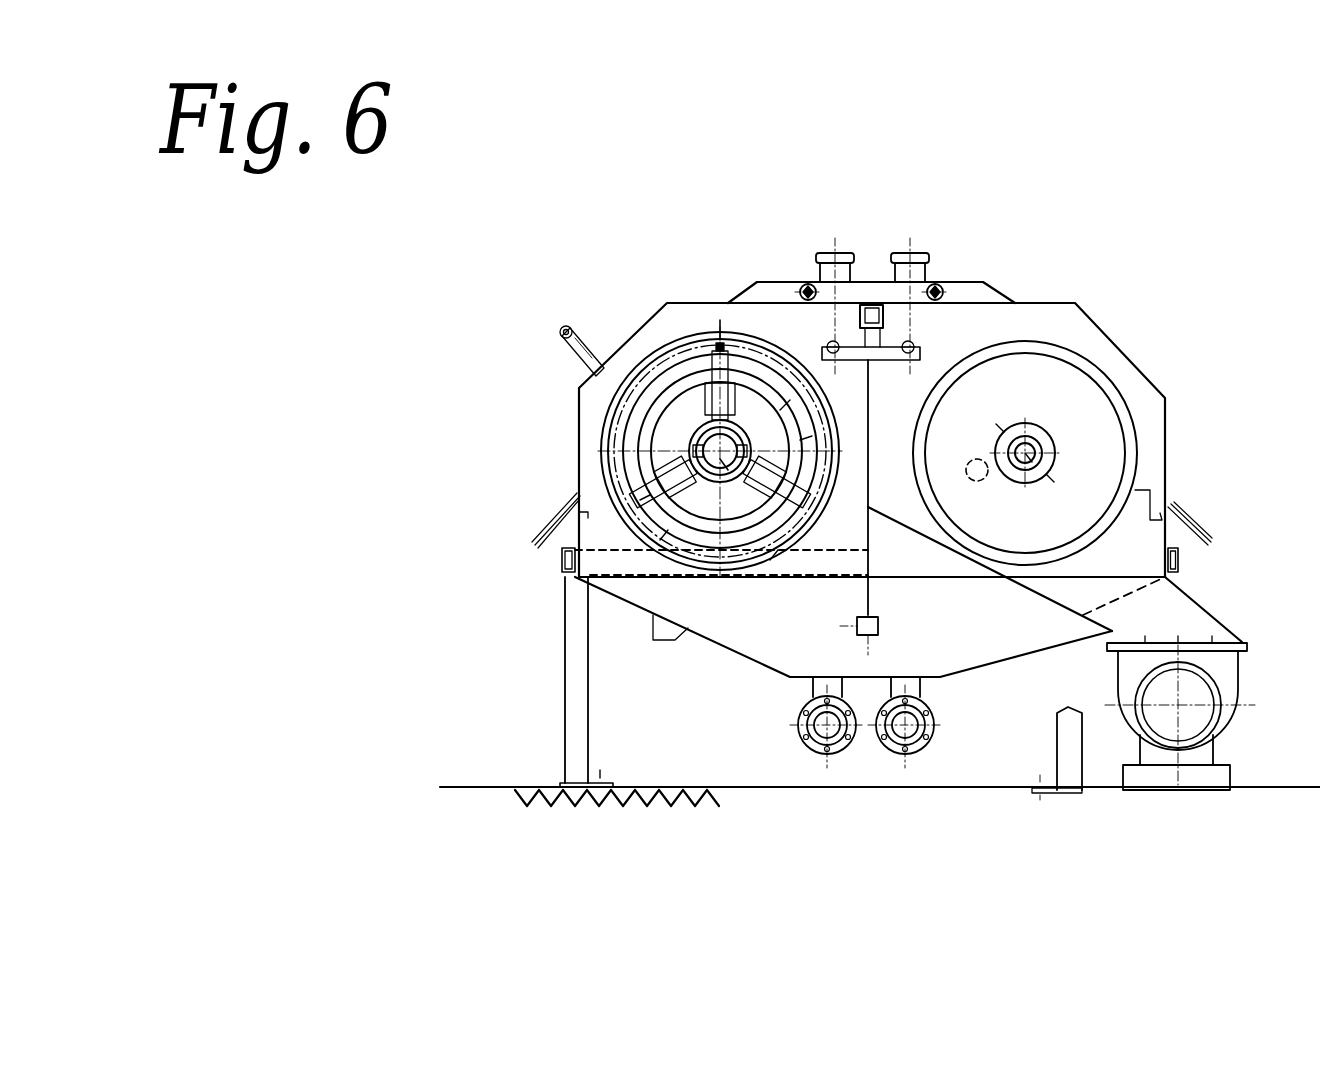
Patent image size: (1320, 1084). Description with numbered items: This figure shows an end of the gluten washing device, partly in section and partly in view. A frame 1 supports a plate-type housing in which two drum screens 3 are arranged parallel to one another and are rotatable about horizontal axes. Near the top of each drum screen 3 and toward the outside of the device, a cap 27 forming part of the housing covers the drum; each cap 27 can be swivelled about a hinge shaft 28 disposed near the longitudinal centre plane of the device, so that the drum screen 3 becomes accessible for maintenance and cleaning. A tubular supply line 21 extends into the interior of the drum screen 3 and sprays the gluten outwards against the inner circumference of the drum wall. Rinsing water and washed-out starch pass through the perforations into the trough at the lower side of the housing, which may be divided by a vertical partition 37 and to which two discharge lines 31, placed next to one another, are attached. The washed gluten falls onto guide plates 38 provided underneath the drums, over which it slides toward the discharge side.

The frame 1 is at (578, 719).
The drum screen 3 is at (650, 353).
The tubular supply line 21 is at (981, 455).
The cap 27 is at (578, 417).
The hinge shaft 28 is at (935, 283).
The discharge line 31 is at (905, 740).
The vertical partition 37 is at (868, 592).
The guide plate 38 is at (1047, 602).